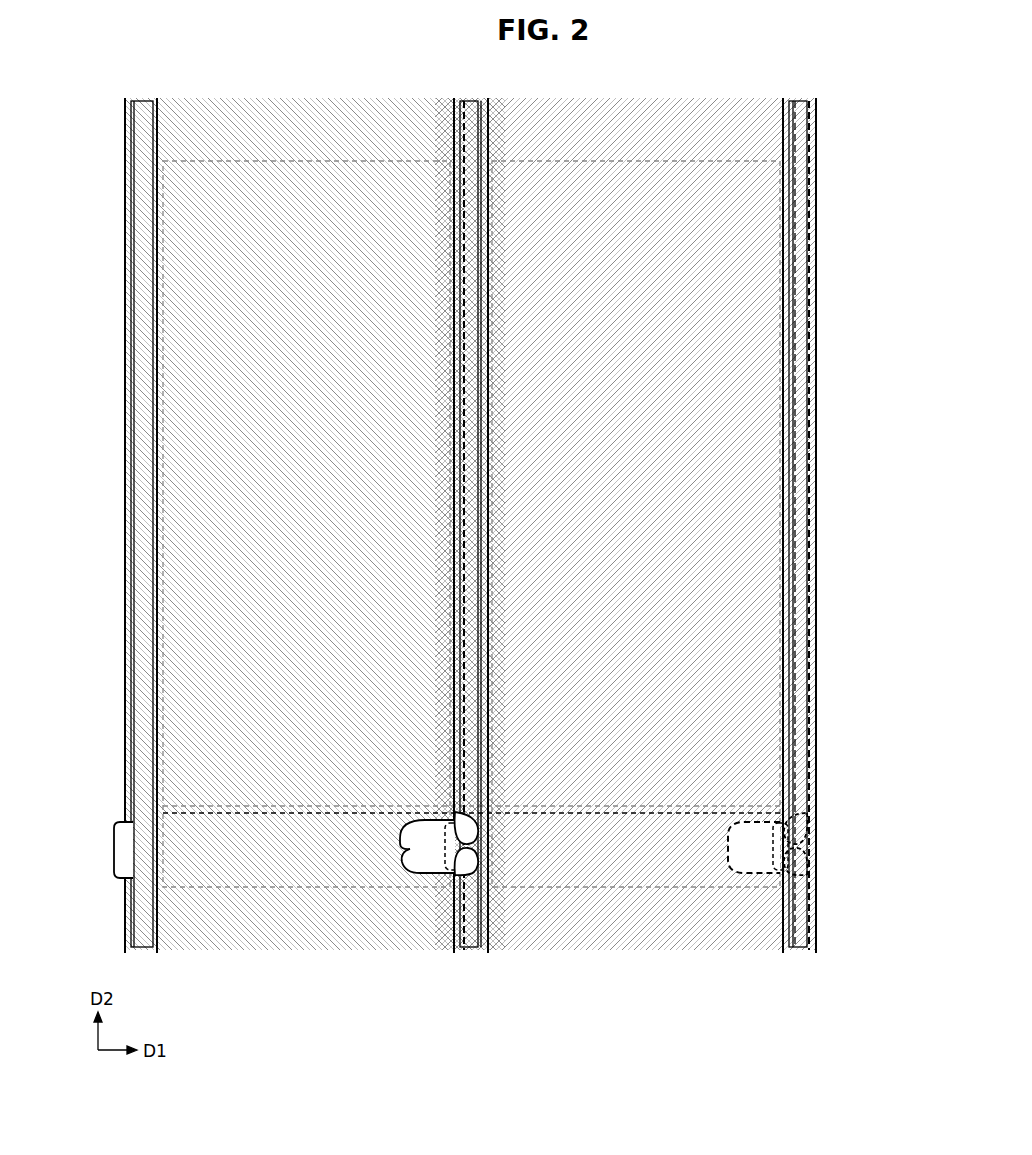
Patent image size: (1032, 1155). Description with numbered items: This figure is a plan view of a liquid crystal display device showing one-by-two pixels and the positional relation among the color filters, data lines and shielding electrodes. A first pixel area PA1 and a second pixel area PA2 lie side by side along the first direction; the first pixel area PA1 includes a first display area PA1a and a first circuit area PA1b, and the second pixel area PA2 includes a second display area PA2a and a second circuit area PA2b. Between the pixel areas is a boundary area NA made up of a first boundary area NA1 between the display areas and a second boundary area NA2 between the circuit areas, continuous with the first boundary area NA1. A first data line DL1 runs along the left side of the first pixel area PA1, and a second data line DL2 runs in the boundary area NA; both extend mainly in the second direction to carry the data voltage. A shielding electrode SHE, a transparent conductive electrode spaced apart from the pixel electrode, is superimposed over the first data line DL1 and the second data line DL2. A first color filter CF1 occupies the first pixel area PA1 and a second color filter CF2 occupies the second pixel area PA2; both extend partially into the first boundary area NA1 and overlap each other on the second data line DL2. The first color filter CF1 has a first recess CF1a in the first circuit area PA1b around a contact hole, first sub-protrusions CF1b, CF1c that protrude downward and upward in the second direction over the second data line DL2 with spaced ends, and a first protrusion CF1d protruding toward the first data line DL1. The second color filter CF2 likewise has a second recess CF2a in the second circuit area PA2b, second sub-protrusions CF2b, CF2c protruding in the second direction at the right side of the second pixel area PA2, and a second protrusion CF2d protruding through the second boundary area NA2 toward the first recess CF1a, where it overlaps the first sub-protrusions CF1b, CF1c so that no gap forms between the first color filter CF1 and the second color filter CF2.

The first data line DL1 is at (143, 103).
The second data line DL2 is at (476, 103).
The shielding electrode SHE is at (152, 148).
The first color filter CF1 is at (130, 695).
The second color filter CF2 is at (806, 110).
The first pixel area PA1 is at (75, 758).
The first display area PA1a is at (162, 752).
The first circuit area PA1b is at (162, 823).
The first recess CF1a is at (412, 870).
The first sub-protrusion (first portion) CF1b is at (468, 830).
The first sub-protrusion (second portion) CF1c is at (470, 866).
The first protrusion CF1d is at (115, 865).
The second recess CF2a is at (730, 845).
The second sub-protrusion (first portion) CF2b is at (803, 830).
The second sub-protrusion (second portion) CF2c is at (797, 868).
The second protrusion CF2d is at (444, 862).
The second pixel area PA2 is at (867, 758).
The second display area PA2a is at (780, 752).
The second circuit area PA2b is at (780, 822).
The boundary area NA is at (582, 975).
The first boundary area NA1 is at (493, 783).
The second boundary area NA2 is at (487, 887).